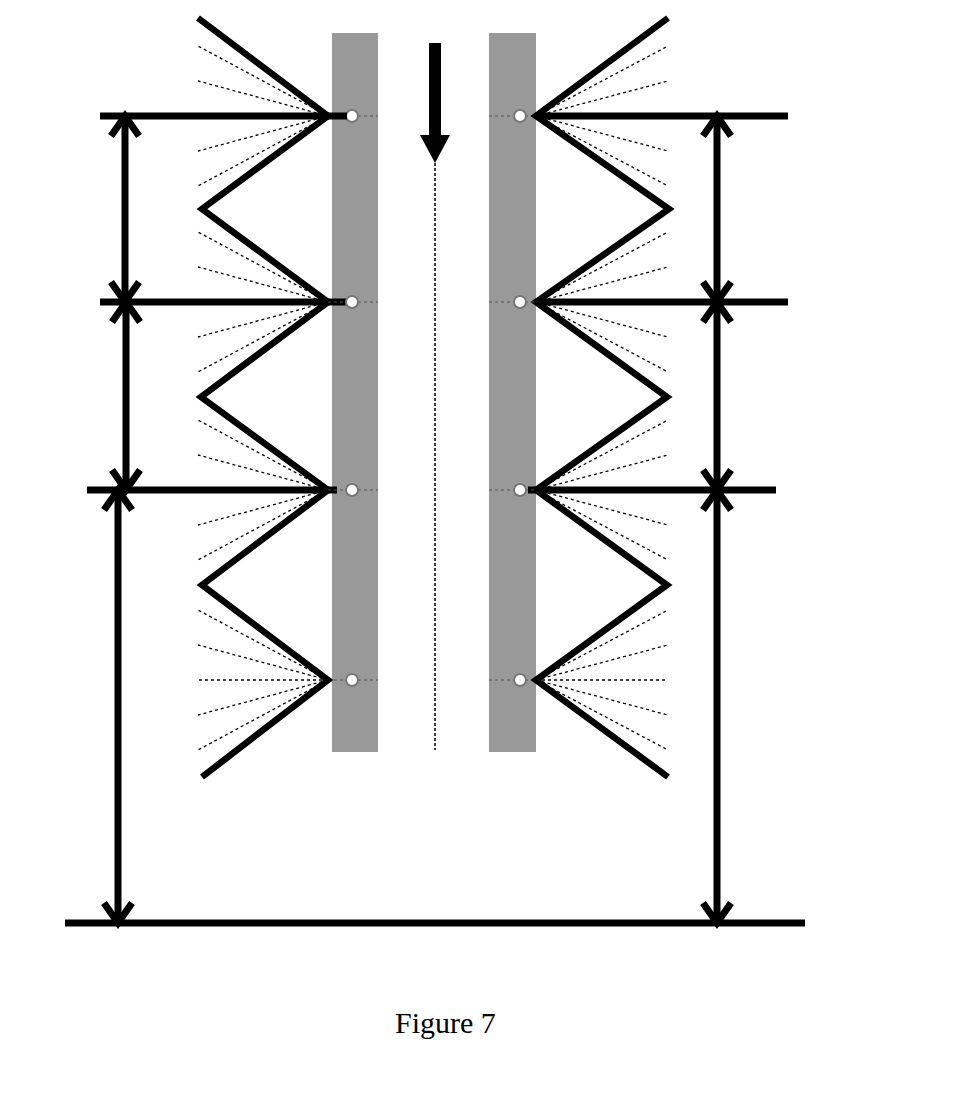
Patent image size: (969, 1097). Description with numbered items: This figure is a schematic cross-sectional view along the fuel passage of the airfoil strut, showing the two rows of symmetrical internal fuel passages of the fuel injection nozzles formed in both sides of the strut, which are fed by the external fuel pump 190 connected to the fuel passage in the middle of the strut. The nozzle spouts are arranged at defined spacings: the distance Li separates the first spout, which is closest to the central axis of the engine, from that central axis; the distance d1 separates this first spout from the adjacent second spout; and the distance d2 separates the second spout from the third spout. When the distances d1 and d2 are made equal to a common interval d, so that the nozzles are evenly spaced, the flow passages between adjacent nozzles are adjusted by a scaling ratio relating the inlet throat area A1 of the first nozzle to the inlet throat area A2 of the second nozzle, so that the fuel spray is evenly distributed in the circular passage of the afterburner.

The external fuel pump 190 is at (410, 932).
The inlet throat area of the first nozzle A1 is at (311, 505).
The inlet throat area of the second nozzle A2 is at (318, 309).
The distribution interval distance between nozzles d is at (139, 303).
The distance between first spout and second spout d1 is at (739, 396).
The distance between second spout and third spout d2 is at (739, 209).
The distance between first spout and engine central axis Li is at (436, 706).